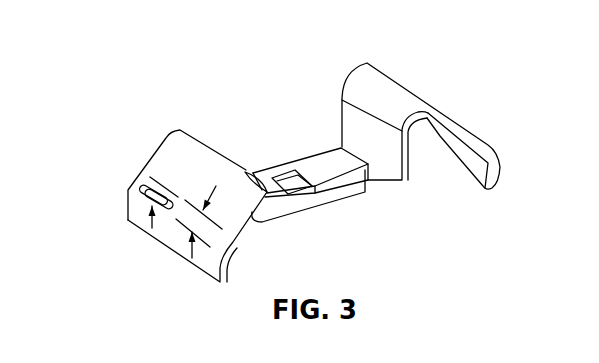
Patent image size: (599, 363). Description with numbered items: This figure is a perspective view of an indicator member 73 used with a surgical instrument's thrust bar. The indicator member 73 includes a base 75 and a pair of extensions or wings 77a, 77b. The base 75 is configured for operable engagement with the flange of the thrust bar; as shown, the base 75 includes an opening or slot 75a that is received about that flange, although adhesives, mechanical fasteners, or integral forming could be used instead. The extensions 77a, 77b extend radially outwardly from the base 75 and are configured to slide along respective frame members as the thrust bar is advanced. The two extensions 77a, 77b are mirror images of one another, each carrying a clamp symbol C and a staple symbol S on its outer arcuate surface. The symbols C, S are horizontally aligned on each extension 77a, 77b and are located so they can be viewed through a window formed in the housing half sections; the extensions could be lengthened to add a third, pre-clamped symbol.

The indicator member 73 is at (255, 100).
The base 75 is at (327, 199).
The slot 75a is at (293, 184).
The extension 77a is at (403, 85).
The extension 77b is at (165, 181).
The staple symbol S is at (143, 196).
The clamp symbol C is at (178, 228).